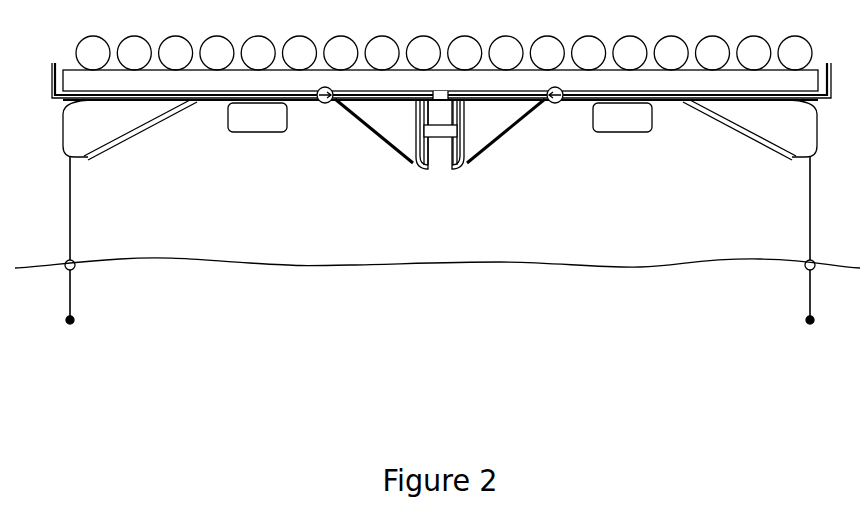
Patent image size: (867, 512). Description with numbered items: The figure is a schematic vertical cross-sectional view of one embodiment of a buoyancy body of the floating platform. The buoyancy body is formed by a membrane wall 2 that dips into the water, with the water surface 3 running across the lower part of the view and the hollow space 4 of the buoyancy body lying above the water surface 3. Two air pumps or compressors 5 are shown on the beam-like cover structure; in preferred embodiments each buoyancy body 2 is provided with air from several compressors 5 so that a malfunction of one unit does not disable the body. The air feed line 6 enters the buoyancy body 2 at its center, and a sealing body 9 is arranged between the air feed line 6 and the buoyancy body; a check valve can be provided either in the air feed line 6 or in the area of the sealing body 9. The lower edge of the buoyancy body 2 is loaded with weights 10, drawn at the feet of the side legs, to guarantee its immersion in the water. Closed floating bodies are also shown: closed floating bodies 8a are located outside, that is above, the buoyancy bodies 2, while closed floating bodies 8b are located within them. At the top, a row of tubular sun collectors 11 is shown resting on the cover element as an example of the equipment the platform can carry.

The membrane wall of the buoyancy body 2 is at (70, 226).
The water surface 3 is at (178, 262).
The hollow space 4 is at (732, 220).
The air pumps or compressors 5 is at (322, 103).
The air feed line 6 is at (410, 160).
The closed floating bodies outside the buoyancy body 8a is at (748, 113).
The closed floating bodies within the buoyancy body 8b is at (255, 115).
The sealing body 9 is at (440, 137).
The weights 10 is at (808, 320).
The tubular sun collectors 11 is at (467, 53).